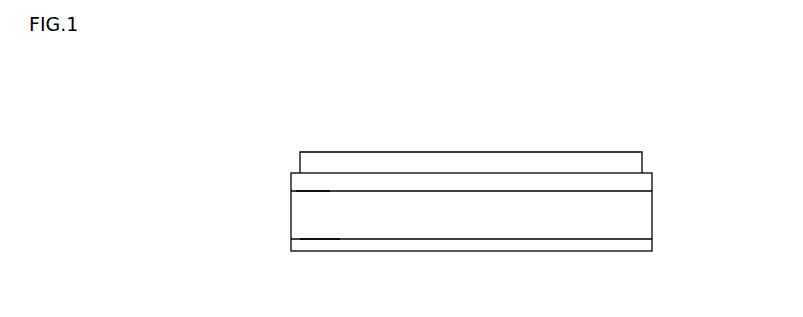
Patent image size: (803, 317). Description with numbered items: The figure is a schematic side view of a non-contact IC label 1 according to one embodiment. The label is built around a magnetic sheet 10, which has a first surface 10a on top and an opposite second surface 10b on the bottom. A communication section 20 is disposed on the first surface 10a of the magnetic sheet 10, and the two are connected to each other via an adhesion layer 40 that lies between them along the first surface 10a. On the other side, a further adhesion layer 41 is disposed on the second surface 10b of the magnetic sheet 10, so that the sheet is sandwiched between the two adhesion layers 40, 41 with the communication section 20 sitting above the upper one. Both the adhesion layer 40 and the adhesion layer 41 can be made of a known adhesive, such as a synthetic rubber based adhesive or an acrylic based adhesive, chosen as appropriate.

The non-contact IC label 1 is at (295, 138).
The communication section 20 is at (482, 148).
The magnetic sheet 10 is at (302, 218).
The first surface 10a is at (307, 191).
The second surface 10b is at (318, 239).
The adhesion layer 40 is at (638, 182).
The adhesion layer 41 is at (640, 243).